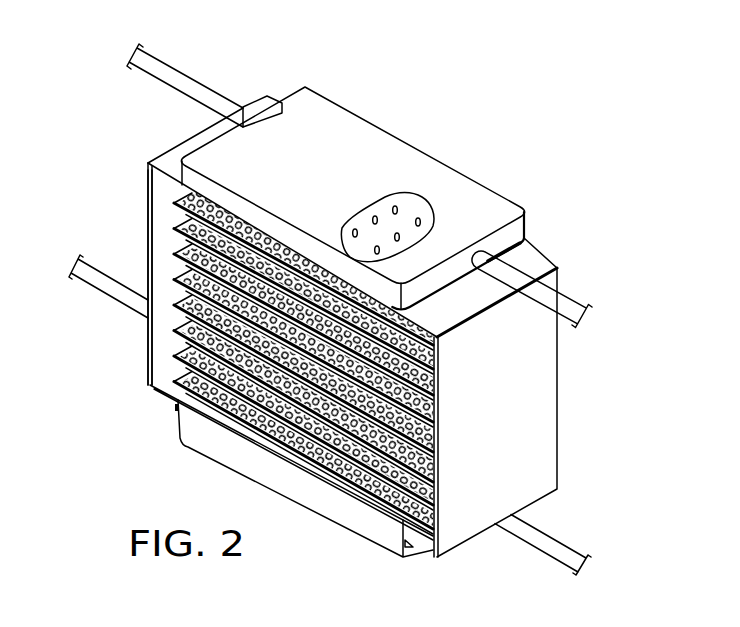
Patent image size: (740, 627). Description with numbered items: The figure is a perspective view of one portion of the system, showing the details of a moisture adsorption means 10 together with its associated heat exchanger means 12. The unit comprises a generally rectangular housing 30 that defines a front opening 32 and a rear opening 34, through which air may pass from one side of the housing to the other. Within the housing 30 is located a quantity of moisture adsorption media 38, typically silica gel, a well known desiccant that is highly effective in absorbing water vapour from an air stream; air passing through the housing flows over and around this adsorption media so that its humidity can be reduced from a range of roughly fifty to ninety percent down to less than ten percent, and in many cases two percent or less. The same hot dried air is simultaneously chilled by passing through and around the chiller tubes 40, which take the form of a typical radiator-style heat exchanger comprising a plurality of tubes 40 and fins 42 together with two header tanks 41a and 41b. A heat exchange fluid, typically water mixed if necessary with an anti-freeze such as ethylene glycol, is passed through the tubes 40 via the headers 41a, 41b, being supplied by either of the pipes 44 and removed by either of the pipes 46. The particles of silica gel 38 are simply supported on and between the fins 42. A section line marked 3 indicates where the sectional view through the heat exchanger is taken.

The moisture adsorption means 10 is at (472, 147).
The heat exchanger means 12 is at (472, 147).
The housing 30 is at (466, 204).
The front opening 32 is at (292, 360).
The rear opening 34 is at (386, 124).
The moisture adsorption media 38 is at (187, 380).
The chiller tubes 40 is at (380, 243).
The header tank 41a is at (378, 240).
The header tank 41b is at (342, 513).
The fins 42 is at (176, 272).
The pipes 44 is at (208, 93).
The pipes 46 is at (108, 294).
The section line 3- 3 is at (87, 156).